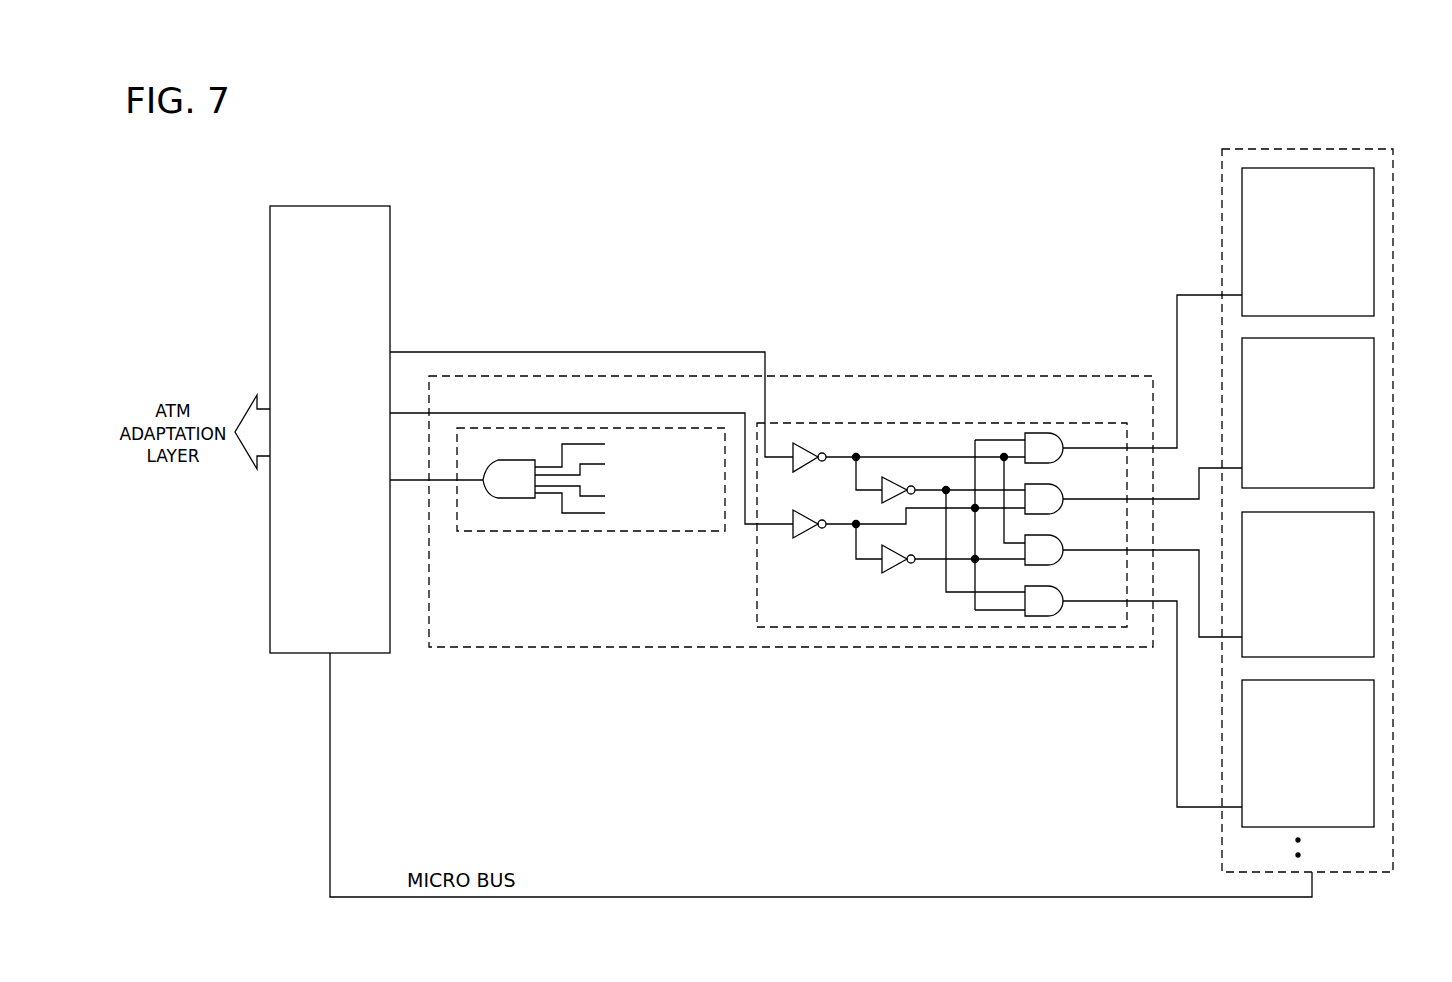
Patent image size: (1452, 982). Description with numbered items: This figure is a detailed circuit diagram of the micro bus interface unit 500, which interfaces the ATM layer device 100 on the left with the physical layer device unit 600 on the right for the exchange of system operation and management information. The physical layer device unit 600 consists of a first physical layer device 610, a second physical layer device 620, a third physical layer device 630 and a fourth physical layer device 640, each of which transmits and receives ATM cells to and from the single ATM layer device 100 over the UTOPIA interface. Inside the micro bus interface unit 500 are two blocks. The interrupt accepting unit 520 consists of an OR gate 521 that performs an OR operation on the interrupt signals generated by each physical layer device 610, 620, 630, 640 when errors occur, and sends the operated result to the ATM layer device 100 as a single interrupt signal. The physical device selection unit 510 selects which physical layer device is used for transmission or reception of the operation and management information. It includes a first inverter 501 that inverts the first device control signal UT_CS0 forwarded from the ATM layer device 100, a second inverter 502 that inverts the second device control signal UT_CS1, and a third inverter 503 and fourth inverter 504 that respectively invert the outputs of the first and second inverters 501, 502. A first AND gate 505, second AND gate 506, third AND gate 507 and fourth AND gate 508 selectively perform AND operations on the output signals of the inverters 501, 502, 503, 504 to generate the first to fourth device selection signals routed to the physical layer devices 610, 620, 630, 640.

The ATM layer device 100 is at (330, 206).
The micro bus interface unit 500 is at (837, 375).
The physical device selection unit 510 is at (757, 582).
The interrupt accepting unit 520 is at (591, 521).
The OR gate 521 is at (518, 498).
The first inverter 501 is at (808, 465).
The second inverter 502 is at (807, 533).
The third inverter 503 is at (893, 480).
The fourth inverter 504 is at (893, 567).
The first AND gate 505 is at (1048, 433).
The second AND gate 506 is at (1040, 463).
The third AND gate 507 is at (1040, 514).
The fourth AND gate 508 is at (1040, 586).
The physical layer device unit 600 is at (1312, 149).
The first physical layer device 610 is at (1374, 197).
The second physical layer device 620 is at (1374, 367).
The third physical layer device 630 is at (1374, 540).
The fourth physical layer device 640 is at (1374, 708).